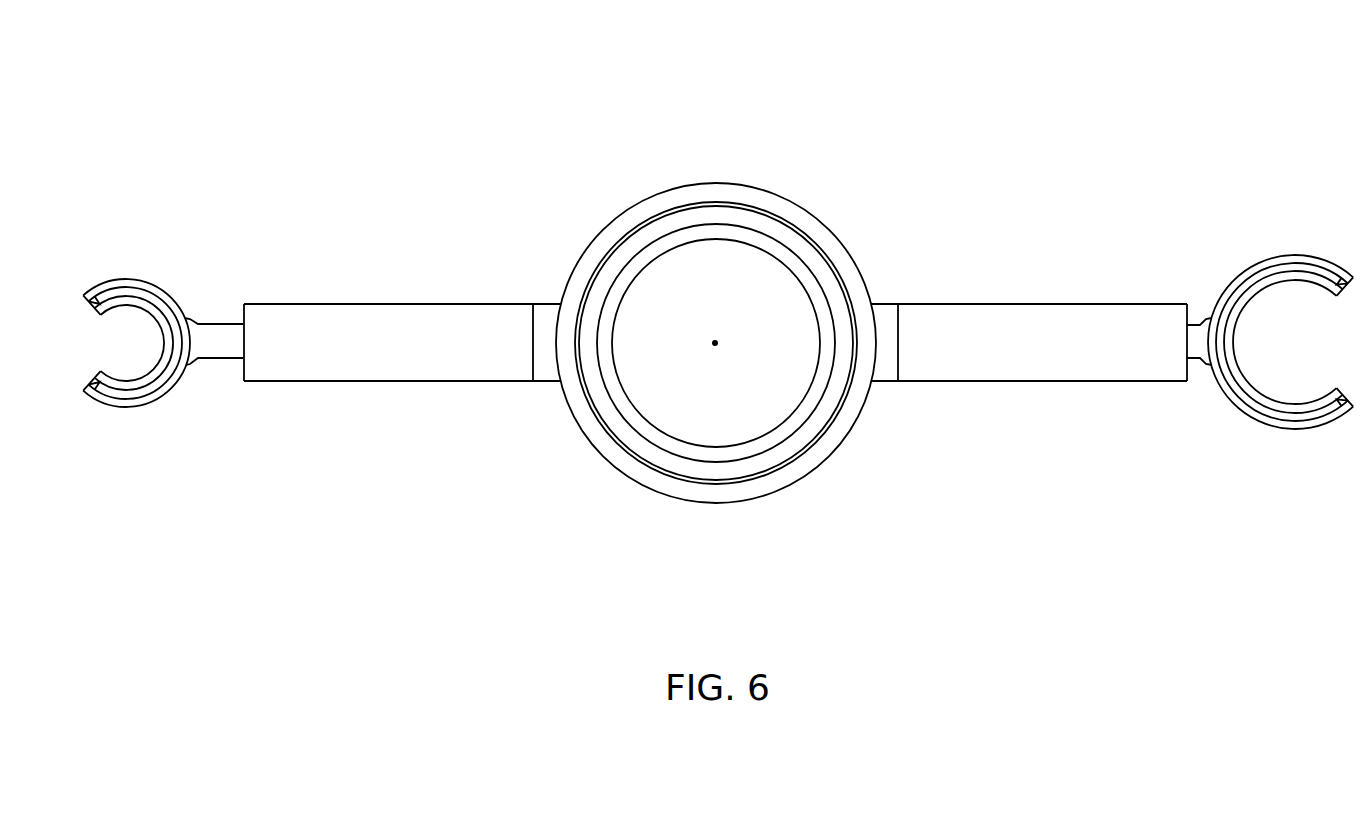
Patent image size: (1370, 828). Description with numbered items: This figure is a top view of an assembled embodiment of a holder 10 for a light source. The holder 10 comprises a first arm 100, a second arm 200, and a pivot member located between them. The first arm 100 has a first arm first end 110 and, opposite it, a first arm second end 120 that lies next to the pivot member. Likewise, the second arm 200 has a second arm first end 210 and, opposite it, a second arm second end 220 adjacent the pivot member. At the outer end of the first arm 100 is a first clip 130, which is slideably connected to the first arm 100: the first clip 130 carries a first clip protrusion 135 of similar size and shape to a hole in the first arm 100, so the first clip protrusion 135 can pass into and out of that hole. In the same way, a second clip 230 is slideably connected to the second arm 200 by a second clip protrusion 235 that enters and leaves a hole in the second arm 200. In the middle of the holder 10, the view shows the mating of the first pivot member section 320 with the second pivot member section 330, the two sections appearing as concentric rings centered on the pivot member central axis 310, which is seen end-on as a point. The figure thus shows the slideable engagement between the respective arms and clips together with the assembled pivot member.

The holder 10 is at (520, 121).
The first arm 100 is at (387, 358).
The first arm first end 110 is at (247, 315).
The first arm second end 120 is at (532, 337).
The first clip 130 is at (116, 270).
The first clip protrusion 135 is at (238, 337).
The second arm 200 is at (1044, 358).
The second arm first end 210 is at (1185, 315).
The second arm second end 220 is at (898, 337).
The second clip 230 is at (1314, 256).
The second clip protrusion 235 is at (1192, 337).
The pivot member central axis 310 is at (715, 343).
The first pivot member section 320 is at (793, 416).
The second pivot member section 330 is at (687, 181).